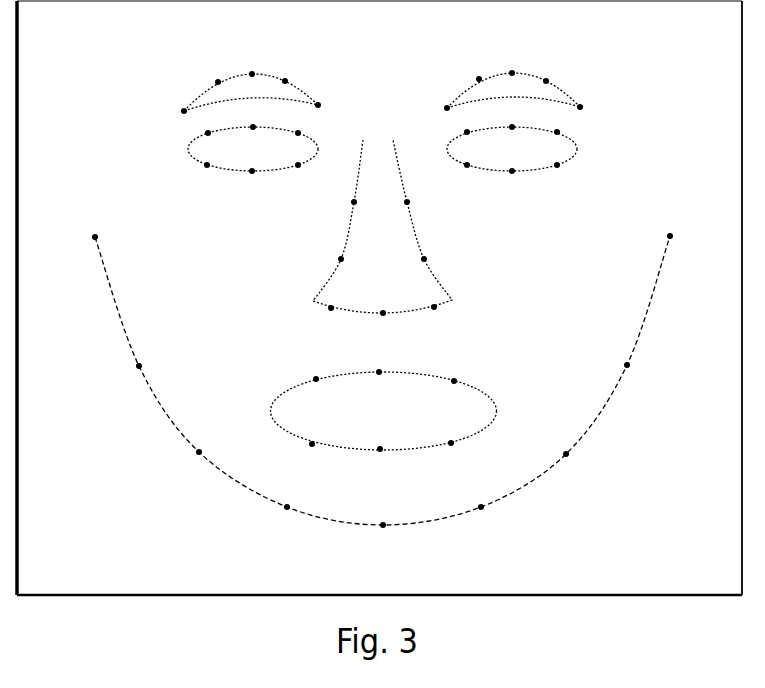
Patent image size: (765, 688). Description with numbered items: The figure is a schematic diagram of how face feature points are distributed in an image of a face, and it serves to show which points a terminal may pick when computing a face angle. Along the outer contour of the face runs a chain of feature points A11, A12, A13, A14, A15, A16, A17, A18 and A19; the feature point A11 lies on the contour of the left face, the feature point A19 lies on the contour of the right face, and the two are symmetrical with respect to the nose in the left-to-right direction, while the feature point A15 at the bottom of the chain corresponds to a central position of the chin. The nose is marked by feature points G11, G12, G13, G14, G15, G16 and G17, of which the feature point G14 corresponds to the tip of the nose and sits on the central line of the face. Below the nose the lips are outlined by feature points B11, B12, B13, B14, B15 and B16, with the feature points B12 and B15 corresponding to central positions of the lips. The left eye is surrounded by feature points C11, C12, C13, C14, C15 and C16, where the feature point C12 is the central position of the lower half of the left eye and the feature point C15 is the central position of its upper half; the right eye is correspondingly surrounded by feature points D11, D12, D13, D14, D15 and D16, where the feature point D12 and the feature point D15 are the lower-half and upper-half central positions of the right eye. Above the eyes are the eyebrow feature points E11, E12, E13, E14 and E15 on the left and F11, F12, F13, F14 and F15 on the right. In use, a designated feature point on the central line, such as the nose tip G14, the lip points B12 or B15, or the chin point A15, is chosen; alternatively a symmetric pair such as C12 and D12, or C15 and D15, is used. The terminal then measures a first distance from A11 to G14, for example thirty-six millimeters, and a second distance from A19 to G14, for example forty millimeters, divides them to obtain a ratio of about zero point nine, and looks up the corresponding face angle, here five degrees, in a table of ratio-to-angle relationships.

The first feature point A11 is at (72, 238).
The face contour feature point A12 is at (115, 367).
The face contour feature point A13 is at (177, 457).
The face contour feature point A14 is at (266, 513).
The chin central feature point A15 is at (382, 539).
The face contour feature point A16 is at (506, 513).
The face contour feature point A17 is at (587, 458).
The face contour feature point A18 is at (648, 365).
The second feature point A19 is at (692, 237).
The mouth feature point B11 is at (302, 369).
The lip central feature point B12 is at (372, 362).
The mouth feature point B13 is at (469, 371).
The mouth feature point B14 is at (469, 452).
The lip central feature point B15 is at (391, 461).
The mouth feature point B16 is at (299, 453).
The left eye feature point C11 is at (197, 174).
The left eye lower-half central feature point C12 is at (248, 180).
The left eye feature point C13 is at (313, 173).
The left eye feature point C14 is at (312, 127).
The left eye upper-half central feature point C15 is at (245, 118).
The left eye feature point C16 is at (194, 127).
The right eye feature point D11 is at (453, 173).
The right eye lower-half central feature point D12 is at (505, 182).
The right eye feature point D13 is at (568, 173).
The right eye feature point D14 is at (575, 126).
The right eye upper-half central feature point D15 is at (503, 118).
The right eye feature point D16 is at (453, 126).
The left eyebrow feature point E11 is at (172, 99).
The left eyebrow feature point E12 is at (208, 72).
The left eyebrow feature point E13 is at (243, 65).
The left eyebrow feature point E14 is at (295, 73).
The left eyebrow feature point E15 is at (333, 96).
The right eyebrow feature point F11 is at (435, 99).
The right eyebrow feature point F12 is at (470, 71).
The right eyebrow feature point F13 is at (512, 65).
The right eyebrow feature point F14 is at (555, 73).
The right eyebrow feature point F15 is at (594, 97).
The nose feature point G11 is at (335, 203).
The nose feature point G12 is at (321, 257).
The nose feature point G13 is at (315, 317).
The nose tip feature point G14 is at (375, 323).
The nose feature point G15 is at (450, 316).
The nose feature point G16 is at (446, 256).
The nose feature point G17 is at (428, 203).